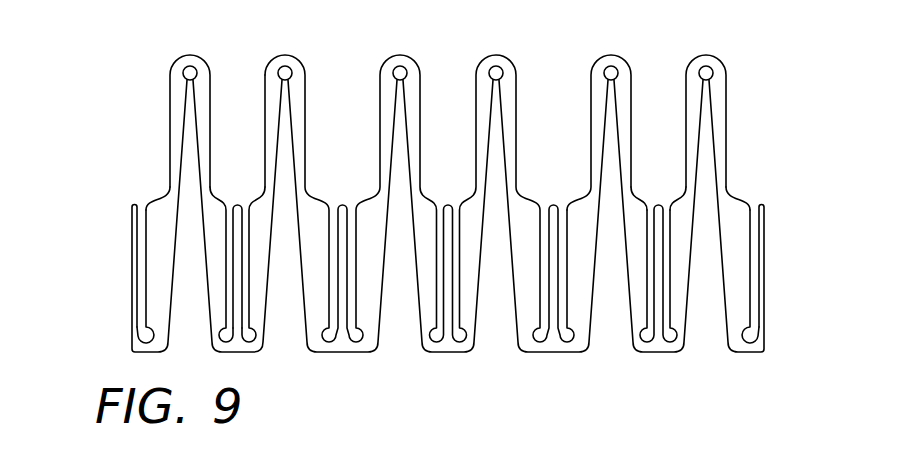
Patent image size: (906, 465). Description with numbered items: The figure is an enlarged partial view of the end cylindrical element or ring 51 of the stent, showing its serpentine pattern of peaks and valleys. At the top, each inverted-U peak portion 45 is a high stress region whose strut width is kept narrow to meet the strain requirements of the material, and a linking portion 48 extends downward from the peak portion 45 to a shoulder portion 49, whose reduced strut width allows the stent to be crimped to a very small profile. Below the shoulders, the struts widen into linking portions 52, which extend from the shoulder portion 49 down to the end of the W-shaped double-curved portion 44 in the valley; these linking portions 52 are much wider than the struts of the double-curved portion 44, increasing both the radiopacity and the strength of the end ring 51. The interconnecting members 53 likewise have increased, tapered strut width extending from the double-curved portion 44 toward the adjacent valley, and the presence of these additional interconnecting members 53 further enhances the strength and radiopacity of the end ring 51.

The double-curved portion (W) 44 is at (622, 355).
The peak portion (inverted-U) 45 is at (185, 56).
The linking portion 48 is at (313, 175).
The shoulder portion 49 is at (167, 201).
The end cylindrical element or ring 51 is at (95, 85).
The linking portion 52 is at (153, 250).
The interconnecting member 53 is at (242, 289).